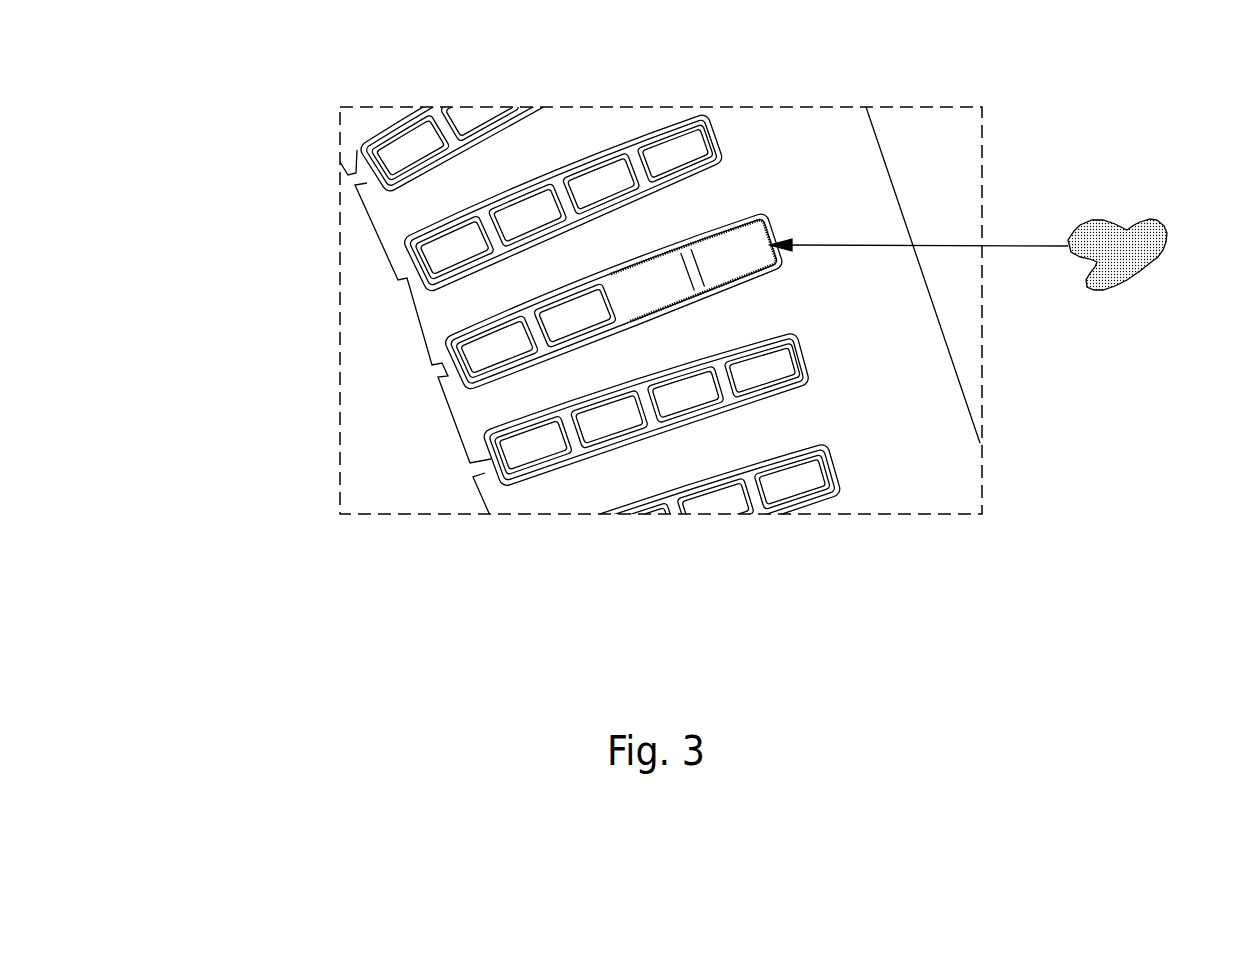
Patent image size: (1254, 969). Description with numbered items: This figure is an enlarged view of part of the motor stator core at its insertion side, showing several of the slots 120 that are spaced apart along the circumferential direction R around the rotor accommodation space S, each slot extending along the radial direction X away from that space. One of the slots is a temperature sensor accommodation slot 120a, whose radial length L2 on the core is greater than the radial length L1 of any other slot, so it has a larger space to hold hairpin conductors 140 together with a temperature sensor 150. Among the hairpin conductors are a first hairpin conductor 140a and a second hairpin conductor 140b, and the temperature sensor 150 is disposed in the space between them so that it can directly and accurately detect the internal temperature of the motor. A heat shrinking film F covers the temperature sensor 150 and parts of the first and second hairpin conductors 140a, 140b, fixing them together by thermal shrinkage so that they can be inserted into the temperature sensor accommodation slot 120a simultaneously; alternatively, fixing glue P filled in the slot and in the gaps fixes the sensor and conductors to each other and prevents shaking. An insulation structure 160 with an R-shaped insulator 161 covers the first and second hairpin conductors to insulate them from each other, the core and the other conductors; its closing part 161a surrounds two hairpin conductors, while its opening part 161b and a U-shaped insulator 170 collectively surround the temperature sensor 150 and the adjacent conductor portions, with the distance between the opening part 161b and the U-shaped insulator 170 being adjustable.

The slot 120 is at (838, 347).
The temperature sensor accommodation slot 120a is at (838, 217).
The hairpin conductor 140 is at (177, 71).
The first hairpin conductor 140a is at (760, 217).
The second hairpin conductor 140b is at (661, 259).
The R-shaped insulator 161 is at (177, 151).
The closing part 161a is at (559, 292).
The opening part 161b is at (574, 220).
The insulation structure 160 is at (637, 283).
The temperature sensor 150 is at (667, 263).
The U-shaped insulator 170 is at (773, 233).
The heat shrinking film F is at (691, 262).
The fixing glue P is at (1150, 238).
The rotor accommodation space S is at (412, 485).
The radial length of the other slots L1 is at (507, 507).
The radial length of the temperature sensor accommodation slot L2 is at (467, 407).
The circumferential direction R is at (1010, 397).
The radial direction X is at (607, 585).